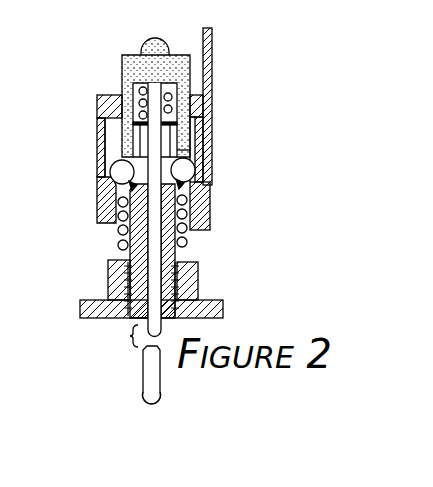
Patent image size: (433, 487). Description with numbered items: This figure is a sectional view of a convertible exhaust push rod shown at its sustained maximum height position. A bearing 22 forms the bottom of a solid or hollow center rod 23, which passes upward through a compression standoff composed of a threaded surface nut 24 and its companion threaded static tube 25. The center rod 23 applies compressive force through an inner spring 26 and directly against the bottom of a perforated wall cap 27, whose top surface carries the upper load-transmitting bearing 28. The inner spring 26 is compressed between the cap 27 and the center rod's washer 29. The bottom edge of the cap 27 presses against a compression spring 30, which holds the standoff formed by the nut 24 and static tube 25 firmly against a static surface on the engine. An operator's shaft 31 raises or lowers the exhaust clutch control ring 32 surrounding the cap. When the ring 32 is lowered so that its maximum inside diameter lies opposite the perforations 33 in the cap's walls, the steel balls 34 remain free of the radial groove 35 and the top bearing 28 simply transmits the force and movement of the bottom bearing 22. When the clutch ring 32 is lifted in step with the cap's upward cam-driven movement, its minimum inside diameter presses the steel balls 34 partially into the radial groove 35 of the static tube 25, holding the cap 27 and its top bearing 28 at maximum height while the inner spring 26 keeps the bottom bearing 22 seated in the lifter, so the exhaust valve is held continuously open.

The bearing 22 is at (143, 402).
The center rod 23 is at (143, 367).
The threaded surface nut 24 is at (80, 308).
The threaded static tube 25 is at (118, 243).
The spring 26 is at (140, 88).
The perforated wall cap 27 is at (122, 60).
The upper load-transmitting bearing 28 is at (142, 41).
The washer 29 is at (193, 119).
The compression spring 30 is at (187, 242).
The operator's shaft 31 is at (212, 33).
The exhaust clutch control ring 32 is at (212, 112).
The perforations 33 is at (191, 158).
The steel balls 34 is at (196, 168).
The radial groove 35 is at (197, 181).